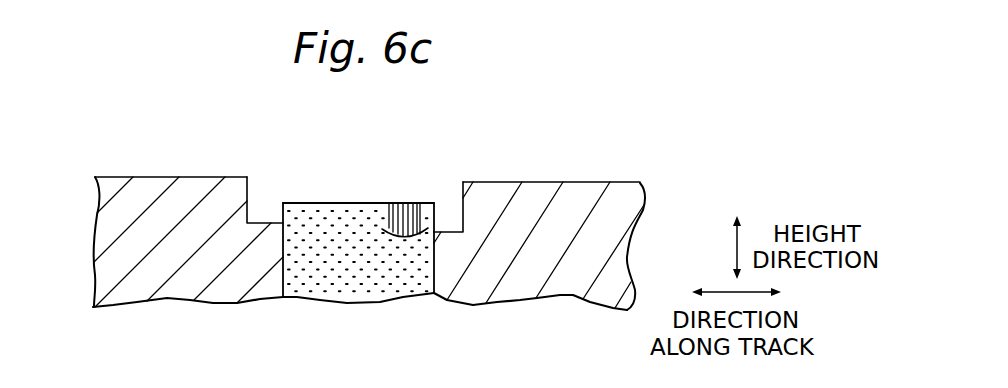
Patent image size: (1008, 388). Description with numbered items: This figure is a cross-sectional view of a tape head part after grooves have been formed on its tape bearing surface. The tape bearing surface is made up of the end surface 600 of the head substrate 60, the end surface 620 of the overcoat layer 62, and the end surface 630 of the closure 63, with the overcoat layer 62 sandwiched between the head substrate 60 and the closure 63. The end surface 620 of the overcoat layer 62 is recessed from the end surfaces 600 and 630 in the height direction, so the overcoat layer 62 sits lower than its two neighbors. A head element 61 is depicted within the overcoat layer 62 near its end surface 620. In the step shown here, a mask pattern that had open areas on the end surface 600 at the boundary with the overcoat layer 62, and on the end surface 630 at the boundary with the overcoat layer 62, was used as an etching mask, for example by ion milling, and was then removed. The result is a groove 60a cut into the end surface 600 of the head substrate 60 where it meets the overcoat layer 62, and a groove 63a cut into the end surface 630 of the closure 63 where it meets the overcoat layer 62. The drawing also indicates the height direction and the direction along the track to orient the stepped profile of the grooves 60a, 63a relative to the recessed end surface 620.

The head substrate 60 is at (506, 267).
The groove 60a is at (445, 215).
The end surface of the head substrate 600 is at (543, 182).
The thin-film magnetic head element 61 is at (407, 241).
The overcoat layer 62 is at (362, 265).
The end surface of the overcoat layer 620 is at (357, 202).
The closure 63 is at (188, 270).
The groove 63a is at (263, 216).
The end surface of the closure 630 is at (177, 177).